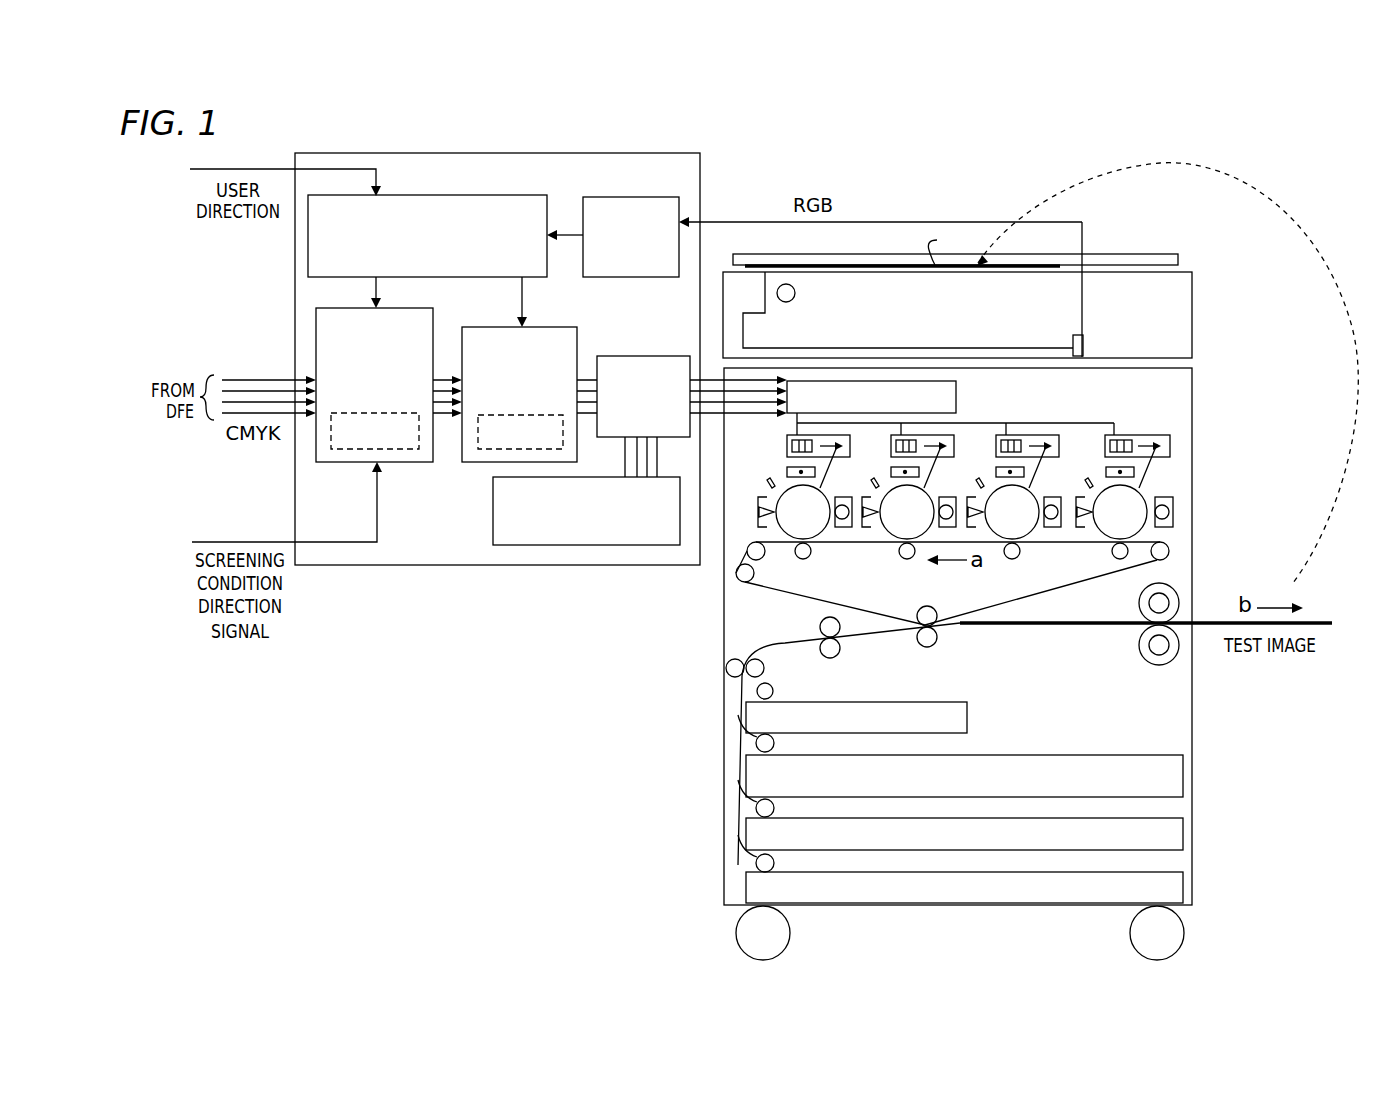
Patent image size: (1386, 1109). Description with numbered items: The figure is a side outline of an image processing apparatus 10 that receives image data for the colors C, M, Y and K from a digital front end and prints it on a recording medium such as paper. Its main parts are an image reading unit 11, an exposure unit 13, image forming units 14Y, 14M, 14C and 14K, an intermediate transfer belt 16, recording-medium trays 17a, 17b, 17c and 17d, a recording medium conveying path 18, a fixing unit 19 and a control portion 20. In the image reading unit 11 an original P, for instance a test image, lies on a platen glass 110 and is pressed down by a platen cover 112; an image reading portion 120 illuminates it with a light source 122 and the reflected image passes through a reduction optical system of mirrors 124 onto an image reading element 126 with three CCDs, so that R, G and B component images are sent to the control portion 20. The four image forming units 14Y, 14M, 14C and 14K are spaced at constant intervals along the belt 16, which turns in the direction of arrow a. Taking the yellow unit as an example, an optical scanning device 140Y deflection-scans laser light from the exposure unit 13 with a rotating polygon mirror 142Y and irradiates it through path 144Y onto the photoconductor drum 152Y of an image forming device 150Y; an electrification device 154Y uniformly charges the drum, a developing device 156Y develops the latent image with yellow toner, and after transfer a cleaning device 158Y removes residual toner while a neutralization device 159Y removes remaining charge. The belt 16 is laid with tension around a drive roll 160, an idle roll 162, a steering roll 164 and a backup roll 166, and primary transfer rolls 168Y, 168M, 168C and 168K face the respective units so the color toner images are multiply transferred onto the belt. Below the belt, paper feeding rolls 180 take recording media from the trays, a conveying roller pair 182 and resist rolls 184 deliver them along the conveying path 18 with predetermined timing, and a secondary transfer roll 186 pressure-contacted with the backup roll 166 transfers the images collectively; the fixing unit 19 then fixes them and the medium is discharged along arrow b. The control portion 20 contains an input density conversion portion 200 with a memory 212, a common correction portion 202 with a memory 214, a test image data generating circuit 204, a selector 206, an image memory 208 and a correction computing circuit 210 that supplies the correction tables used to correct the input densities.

The image processing apparatus 10 is at (930, 170).
The image reading unit 11 is at (1268, 340).
The exposure unit 13 is at (957, 395).
The fourth image forming unit 14K is at (770, 470).
The third image forming unit 14C is at (868, 541).
The second image forming unit 14M is at (989, 468).
The first image forming unit 14Y is at (1156, 477).
The intermediate transfer belt 16 is at (952, 556).
The recording-medium tray 17a is at (967, 718).
The recording-medium tray 17b is at (1183, 775).
The recording-medium tray 17c is at (1183, 834).
The recording-medium tray 17d is at (1183, 888).
The recording medium conveying path 18 is at (1001, 746).
The fixing unit 19 is at (1142, 657).
The control portion 20 is at (497, 565).
The platen glass 110 is at (1001, 283).
The platen cover 112 is at (1132, 254).
The image reading portion 120 is at (1206, 290).
The light source 122 is at (795, 293).
The mirrors 124 is at (742, 313).
The image reading element 126 is at (1088, 347).
The optical scanning device 140Y is at (1189, 425).
The rotating polygon mirror 142Y is at (1113, 433).
The laser beam / scanning optics 144Y is at (1152, 455).
The image forming device 150Y is at (1218, 510).
The photoconductor drum 152Y is at (1130, 550).
The electrification device 154Y is at (1106, 470).
The developing device 156Y is at (1170, 515).
The cleaning device 158Y is at (1080, 528).
The neutralization device 159Y is at (1082, 486).
The drive roll 160 is at (1168, 556).
The idle roll 162 is at (745, 562).
The steering roll 164 is at (737, 582).
The backup roll 166 is at (937, 640).
The fourth primary transfer roll 168K is at (801, 560).
The third primary transfer roll 168C is at (906, 560).
The second primary transfer roll 168M is at (1007, 559).
The first primary transfer roll 168Y is at (1117, 561).
The paper feeding rolls 180 is at (768, 673).
The recording-medium conveying roller pair 182 is at (722, 683).
The resist rolls 184 is at (840, 642).
The secondary transfer roll 186 is at (948, 642).
The input density conversion portion 200 is at (363, 417).
The common correction portion 202 is at (506, 396).
The test image data generating circuit 204 is at (493, 523).
The selector 206 is at (658, 356).
The image memory 208 is at (619, 197).
The correction computing circuit 210 is at (437, 195).
The memory 212 is at (334, 452).
The memory 214 is at (478, 452).